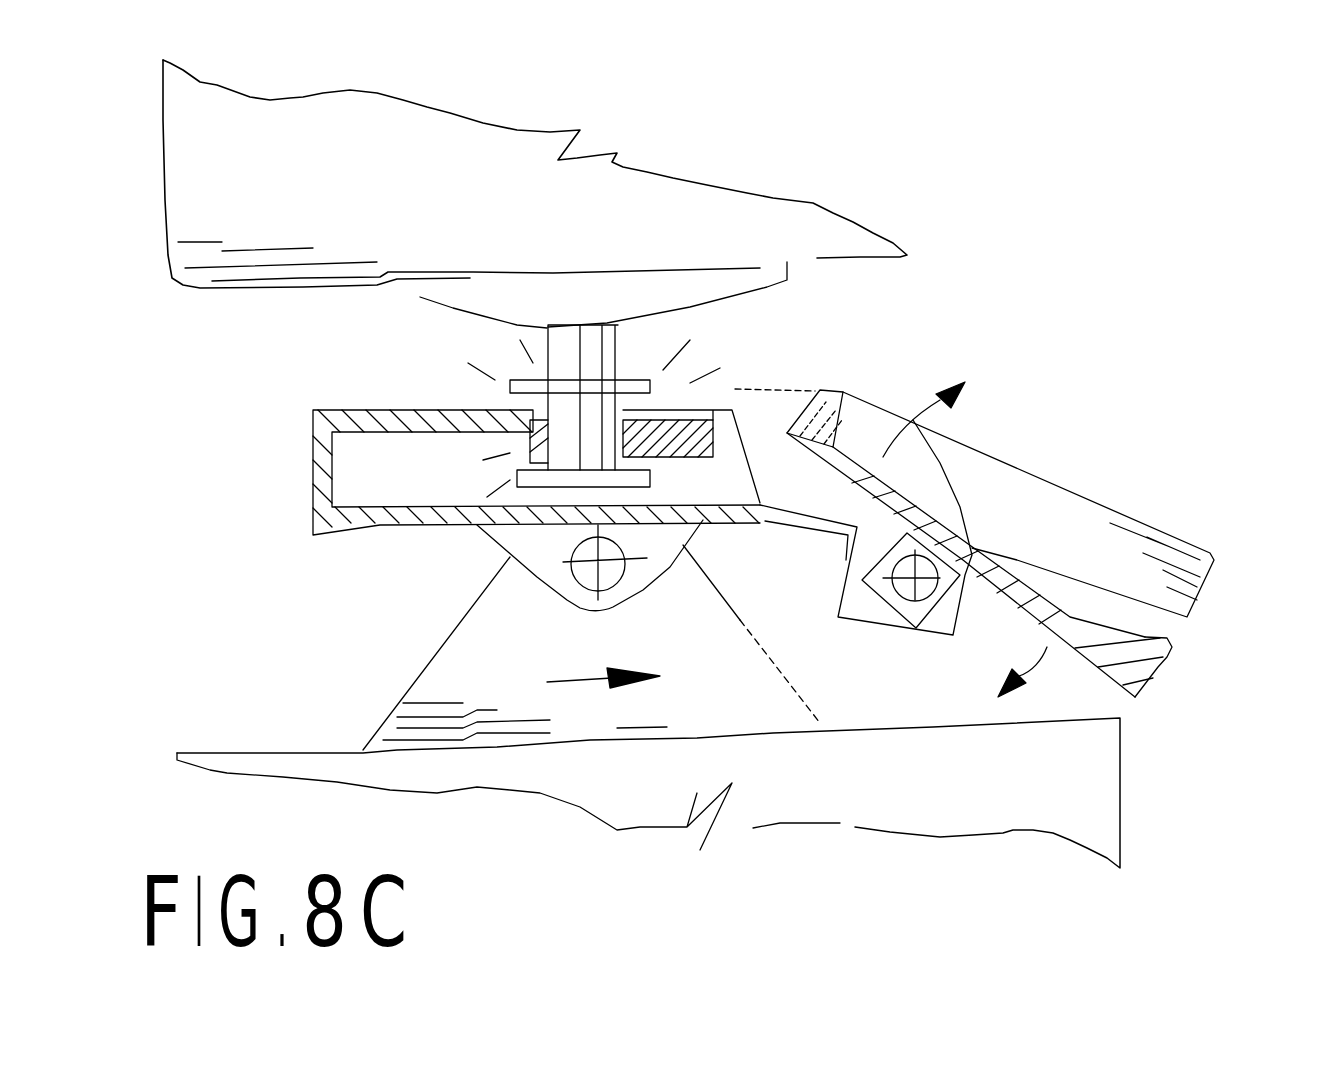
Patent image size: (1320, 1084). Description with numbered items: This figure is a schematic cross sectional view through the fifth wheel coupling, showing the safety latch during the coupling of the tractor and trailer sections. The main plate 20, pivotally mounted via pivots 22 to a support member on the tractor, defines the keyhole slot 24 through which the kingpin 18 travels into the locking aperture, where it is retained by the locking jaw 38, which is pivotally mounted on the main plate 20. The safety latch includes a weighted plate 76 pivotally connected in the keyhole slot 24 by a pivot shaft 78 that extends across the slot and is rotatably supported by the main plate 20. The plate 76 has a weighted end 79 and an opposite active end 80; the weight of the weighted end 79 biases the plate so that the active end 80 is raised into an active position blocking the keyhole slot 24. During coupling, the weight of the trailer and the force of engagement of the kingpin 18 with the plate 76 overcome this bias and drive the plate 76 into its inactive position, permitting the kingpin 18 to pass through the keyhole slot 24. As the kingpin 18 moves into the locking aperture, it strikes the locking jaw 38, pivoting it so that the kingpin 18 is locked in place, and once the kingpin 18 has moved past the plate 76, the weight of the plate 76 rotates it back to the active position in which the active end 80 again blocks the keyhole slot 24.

The kingpin 18 is at (620, 347).
The main plate 20 is at (317, 517).
The pivots 22 is at (588, 572).
The keyhole slot 24 is at (708, 465).
The locking jaw 38 is at (683, 437).
The weighted plate 76 is at (1003, 585).
The pivot shaft 78 is at (910, 583).
The weighted end 79 is at (1160, 675).
The active end 80 is at (843, 393).